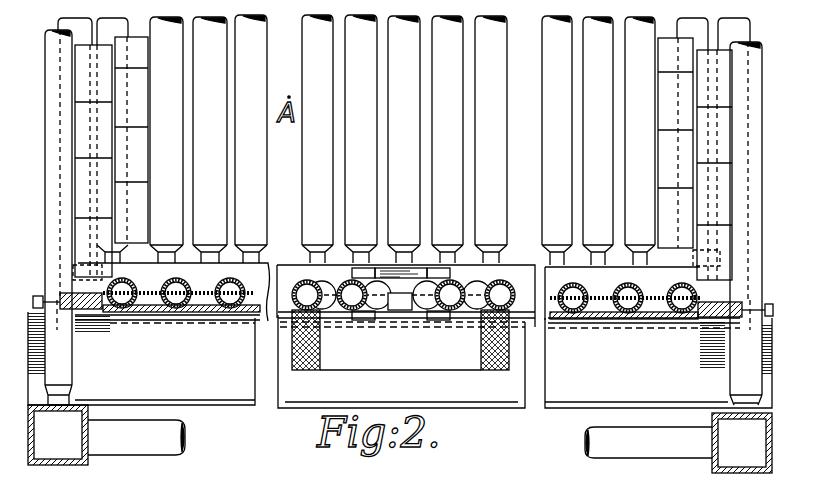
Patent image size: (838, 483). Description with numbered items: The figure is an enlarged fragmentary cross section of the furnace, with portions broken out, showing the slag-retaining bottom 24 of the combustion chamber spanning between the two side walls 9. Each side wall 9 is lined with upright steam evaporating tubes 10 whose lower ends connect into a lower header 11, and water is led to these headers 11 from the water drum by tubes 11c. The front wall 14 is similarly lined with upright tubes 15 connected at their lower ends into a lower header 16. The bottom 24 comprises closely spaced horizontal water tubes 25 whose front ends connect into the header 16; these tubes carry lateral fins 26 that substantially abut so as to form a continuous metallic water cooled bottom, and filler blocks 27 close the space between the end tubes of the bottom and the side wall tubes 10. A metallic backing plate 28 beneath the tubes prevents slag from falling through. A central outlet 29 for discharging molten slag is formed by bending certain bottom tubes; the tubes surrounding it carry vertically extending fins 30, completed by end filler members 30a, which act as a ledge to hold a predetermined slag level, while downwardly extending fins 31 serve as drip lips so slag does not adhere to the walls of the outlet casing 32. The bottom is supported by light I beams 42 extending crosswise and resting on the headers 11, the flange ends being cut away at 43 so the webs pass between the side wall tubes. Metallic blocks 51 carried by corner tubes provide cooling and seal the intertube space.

The side wall 9 is at (401, 180).
The upright steam evaporating tube 10 is at (46, 99).
The lower header 11 is at (52, 452).
The tube 11c is at (130, 447).
The front wall 14 is at (632, 158).
The upright steam evaporating tube 15 is at (257, 211).
The lower header 16 is at (541, 276).
The bottom 24 is at (625, 290).
The water tube 25 is at (212, 290).
The fin 26 is at (148, 292).
The filler block 27 is at (100, 322).
The metallic plate 28 is at (205, 305).
The central outlet 29 is at (414, 340).
The vertically extending fin 30 is at (347, 270).
The end filler member 30a is at (401, 300).
The downwardly extending fin 31 is at (350, 320).
The outlet casing 32 is at (512, 362).
The I beam 42 is at (400, 360).
The cut away flange portion 43 is at (72, 400).
The metallic block 51 is at (118, 170).